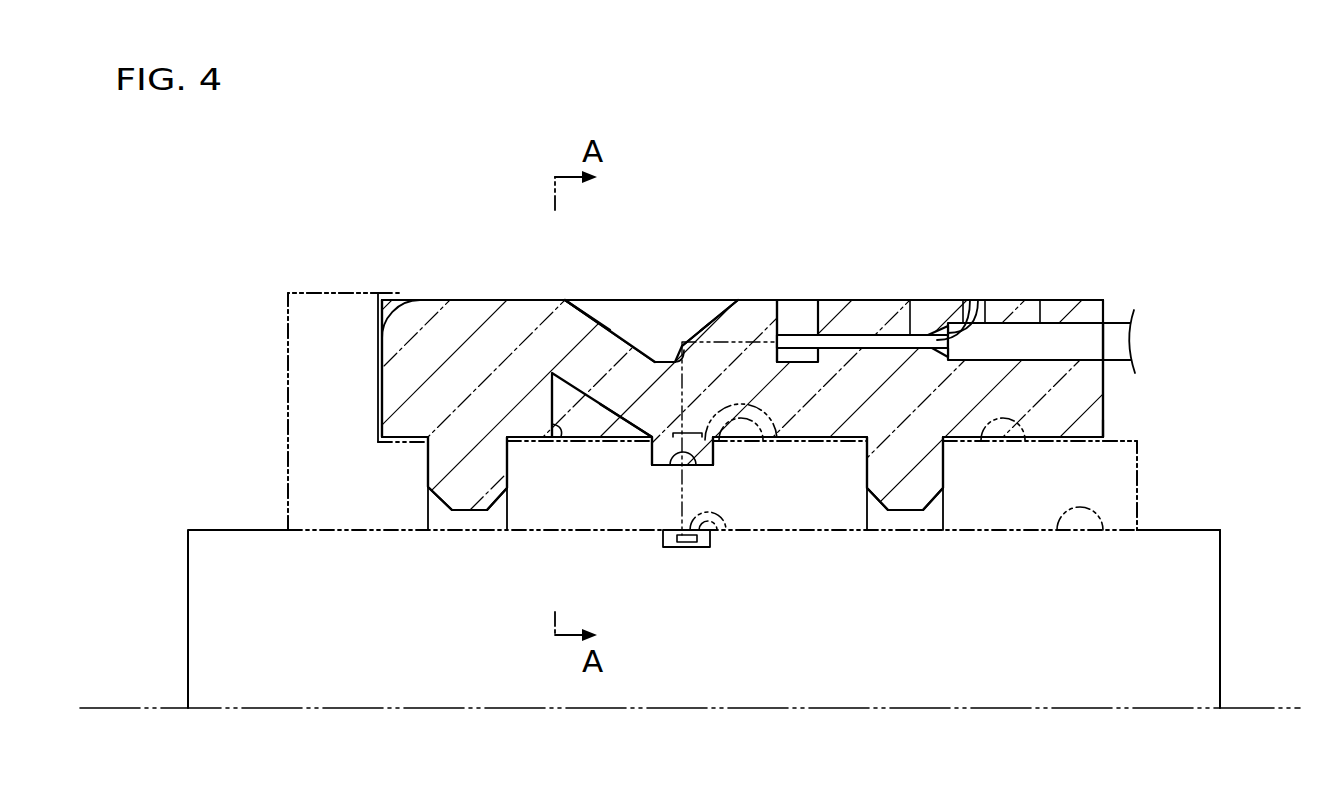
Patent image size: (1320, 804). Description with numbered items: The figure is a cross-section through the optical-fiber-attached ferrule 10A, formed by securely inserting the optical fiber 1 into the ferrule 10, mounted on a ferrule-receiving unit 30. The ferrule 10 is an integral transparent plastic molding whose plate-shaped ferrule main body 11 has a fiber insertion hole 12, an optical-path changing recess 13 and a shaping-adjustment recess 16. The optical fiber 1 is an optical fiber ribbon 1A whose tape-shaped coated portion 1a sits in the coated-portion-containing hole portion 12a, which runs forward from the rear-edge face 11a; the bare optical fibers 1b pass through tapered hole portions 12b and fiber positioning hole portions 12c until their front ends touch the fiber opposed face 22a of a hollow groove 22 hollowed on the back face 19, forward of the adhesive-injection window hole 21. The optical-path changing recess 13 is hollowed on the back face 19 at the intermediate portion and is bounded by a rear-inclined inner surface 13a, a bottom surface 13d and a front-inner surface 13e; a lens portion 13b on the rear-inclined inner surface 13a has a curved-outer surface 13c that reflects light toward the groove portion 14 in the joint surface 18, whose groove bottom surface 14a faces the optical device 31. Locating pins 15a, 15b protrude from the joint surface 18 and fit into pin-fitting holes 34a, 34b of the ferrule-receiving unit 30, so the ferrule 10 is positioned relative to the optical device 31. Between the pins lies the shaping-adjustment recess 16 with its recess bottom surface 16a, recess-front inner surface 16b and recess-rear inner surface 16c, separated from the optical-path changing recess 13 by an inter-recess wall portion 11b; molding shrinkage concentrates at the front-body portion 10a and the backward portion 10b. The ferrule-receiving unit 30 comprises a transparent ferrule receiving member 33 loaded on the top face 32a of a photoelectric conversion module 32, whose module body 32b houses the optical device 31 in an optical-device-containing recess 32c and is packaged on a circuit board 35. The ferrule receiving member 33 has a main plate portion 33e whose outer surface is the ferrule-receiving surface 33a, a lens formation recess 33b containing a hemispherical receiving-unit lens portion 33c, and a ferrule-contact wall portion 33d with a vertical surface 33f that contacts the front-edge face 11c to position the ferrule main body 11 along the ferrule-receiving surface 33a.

The optical fiber 1 is at (1021, 298).
The optical fiber ribbon 1A is at (1115, 321).
The coated portion 1a is at (1112, 362).
The bare optical fiber 1b is at (898, 318).
The ferrule 10 is at (1070, 298).
The optical-fiber-attached ferrule 10A is at (878, 255).
The front-body portion 10a is at (472, 300).
The backward portion 10b is at (1105, 415).
The ferrule main body 11 is at (1105, 305).
The rear-edge face 11a is at (1106, 448).
The inter-recess wall portion 11b is at (628, 357).
The front-edge face 11c is at (382, 345).
The fiber insertion hole 12 is at (1103, 339).
The coated-portion-containing hole portion 12a is at (1115, 350).
The tapered hole portion 12b is at (940, 333).
The fiber positioning hole portion 12c is at (983, 318).
The optical-path changing recess 13 is at (640, 330).
The rear-inclined inner surface 13a is at (728, 310).
The lens portion 13b is at (715, 320).
The curved-outer surface 13c is at (679, 350).
The bottom surface 13d is at (662, 360).
The front-inner surface 13e is at (603, 325).
The groove portion 14 is at (705, 447).
The groove bottom surface 14a is at (713, 462).
The locating pin 15a is at (426, 475).
The locating pin 15b is at (958, 487).
The shaping-adjustment recess 16 is at (583, 432).
The recess bottom surface 16a is at (555, 382).
The recess-front inner surface 16b is at (550, 440).
The recess-rear inner surface 16c is at (630, 443).
The joint surface 18 is at (748, 418).
The back face 19 is at (412, 300).
The adhesive-injection window hole 21 is at (1018, 300).
The hollow groove 22 is at (800, 300).
The fiber opposed face 22a is at (790, 335).
The ferrule-receiving unit 30 is at (250, 318).
The optical device 31 is at (672, 452).
The photoelectric conversion module 32 is at (242, 531).
The top face 32a is at (1087, 535).
The module body 32b is at (1220, 530).
The optical-device-containing recess 32c is at (722, 550).
The ferrule receiving member 33 is at (288, 362).
The ferrule-receiving surface 33a is at (1004, 425).
The lens formation recess 33b is at (760, 443).
The receiving-unit lens portion 33c is at (725, 520).
The ferrule-contact wall portion 33d is at (300, 292).
The main plate portion 33e is at (1138, 470).
The vertical surface 33f is at (418, 305).
The pin-fitting hole 34a is at (443, 527).
The pin-fitting hole 34b is at (915, 522).
The circuit board 35 is at (1228, 708).